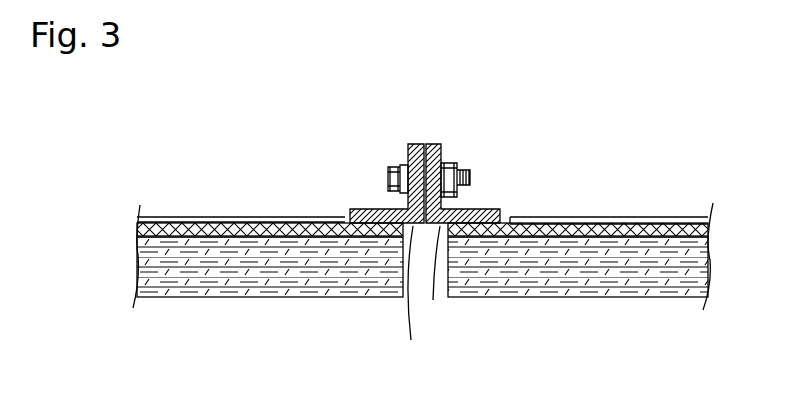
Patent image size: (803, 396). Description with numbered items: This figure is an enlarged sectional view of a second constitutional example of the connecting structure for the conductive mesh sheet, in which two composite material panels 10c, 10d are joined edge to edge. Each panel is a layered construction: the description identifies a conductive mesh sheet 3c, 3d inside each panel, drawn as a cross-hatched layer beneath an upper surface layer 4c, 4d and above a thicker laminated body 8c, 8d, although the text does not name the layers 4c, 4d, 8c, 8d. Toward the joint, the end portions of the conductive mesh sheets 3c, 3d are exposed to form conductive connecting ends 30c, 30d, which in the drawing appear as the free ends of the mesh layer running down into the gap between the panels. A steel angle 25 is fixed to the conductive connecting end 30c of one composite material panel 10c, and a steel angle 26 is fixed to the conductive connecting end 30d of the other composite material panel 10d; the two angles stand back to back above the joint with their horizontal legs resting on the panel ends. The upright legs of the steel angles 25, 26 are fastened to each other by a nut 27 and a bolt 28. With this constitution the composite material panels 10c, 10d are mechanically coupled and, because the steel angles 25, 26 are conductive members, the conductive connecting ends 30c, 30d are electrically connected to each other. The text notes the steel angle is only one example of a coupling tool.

The composite material panel 10c is at (283, 245).
The composite material panel 10d is at (566, 239).
The surface plate 4c is at (227, 218).
The surface plate 4d is at (623, 217).
The conductive mesh sheet 3c is at (273, 228).
The conductive mesh sheet 3d is at (595, 227).
The laminated core layer 8c is at (270, 273).
The laminated core layer 8d is at (600, 280).
The conductive connecting end 30c is at (415, 296).
The conductive connecting end 30d is at (439, 277).
The steel angle 25 is at (412, 143).
The steel angle 26 is at (437, 143).
The nut 27 is at (388, 170).
The bolt 28 is at (457, 162).